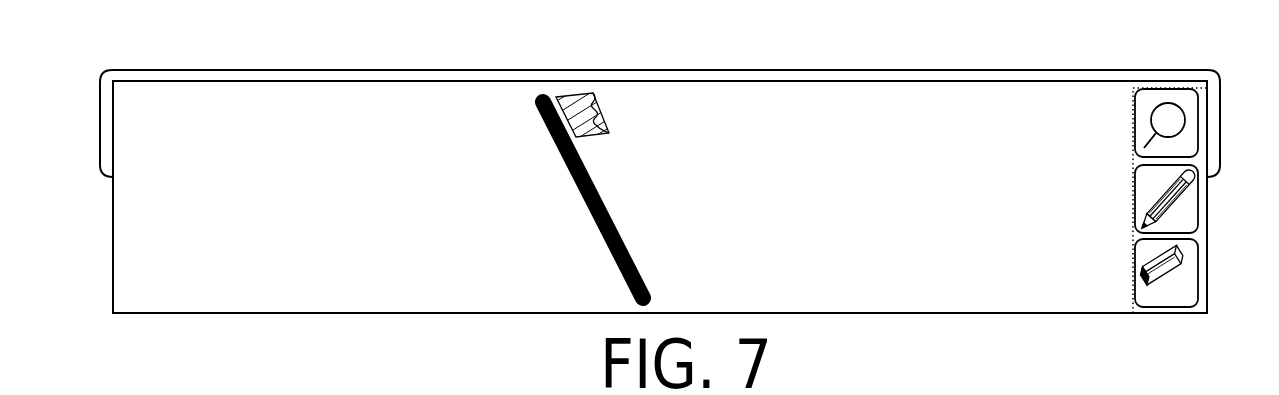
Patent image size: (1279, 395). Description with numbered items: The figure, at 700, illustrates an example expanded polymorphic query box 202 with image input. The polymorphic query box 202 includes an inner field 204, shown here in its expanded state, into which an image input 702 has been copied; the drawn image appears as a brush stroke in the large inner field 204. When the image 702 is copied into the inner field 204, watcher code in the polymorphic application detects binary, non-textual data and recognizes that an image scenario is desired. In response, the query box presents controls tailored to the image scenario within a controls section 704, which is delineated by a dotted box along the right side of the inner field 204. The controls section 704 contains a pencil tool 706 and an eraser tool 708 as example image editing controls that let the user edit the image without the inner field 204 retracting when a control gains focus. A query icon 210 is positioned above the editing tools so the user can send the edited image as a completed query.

The expanded polymorphic query box with image input 700 is at (122, 30).
The polymorphic query box 202 is at (973, 70).
The inner field 204 is at (113, 125).
The image input 702 is at (753, 270).
The controls section 704 is at (1185, 313).
The query icon 210 is at (1135, 117).
The pencil tool 706 is at (1135, 192).
The eraser tool 708 is at (1135, 266).